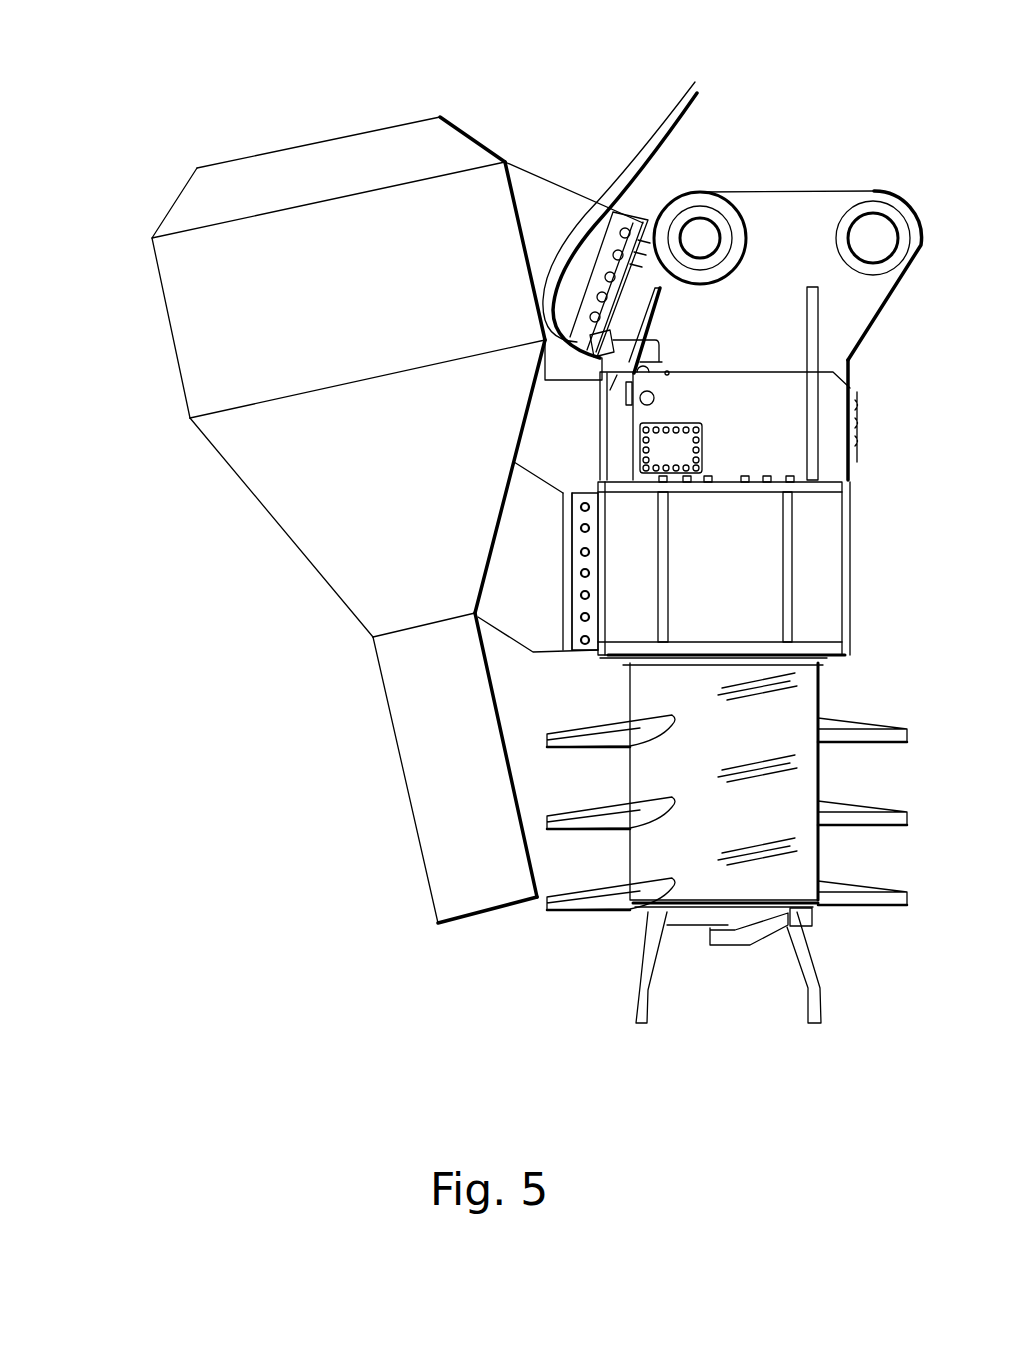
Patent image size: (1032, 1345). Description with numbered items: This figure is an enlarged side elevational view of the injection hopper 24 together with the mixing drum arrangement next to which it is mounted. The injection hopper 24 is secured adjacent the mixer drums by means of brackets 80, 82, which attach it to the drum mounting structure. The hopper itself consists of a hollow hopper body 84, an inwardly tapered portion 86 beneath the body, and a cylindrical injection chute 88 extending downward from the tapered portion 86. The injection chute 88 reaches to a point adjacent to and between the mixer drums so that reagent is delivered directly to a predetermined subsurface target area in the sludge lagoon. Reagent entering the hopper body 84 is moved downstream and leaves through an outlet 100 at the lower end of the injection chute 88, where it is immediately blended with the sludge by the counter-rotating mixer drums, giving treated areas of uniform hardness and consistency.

The injection hopper 24 is at (214, 136).
The bracket 80 is at (550, 200).
The bracket 82 is at (502, 560).
The hollow hopper body 84 is at (168, 323).
The inwardly tapered portion 86 is at (287, 517).
The cylindrical injection chute 88 is at (447, 852).
The outlet 100 is at (480, 920).